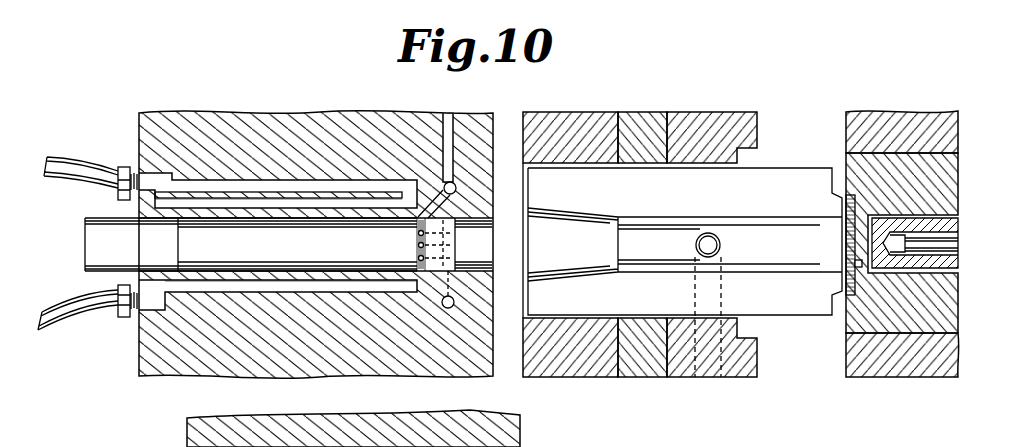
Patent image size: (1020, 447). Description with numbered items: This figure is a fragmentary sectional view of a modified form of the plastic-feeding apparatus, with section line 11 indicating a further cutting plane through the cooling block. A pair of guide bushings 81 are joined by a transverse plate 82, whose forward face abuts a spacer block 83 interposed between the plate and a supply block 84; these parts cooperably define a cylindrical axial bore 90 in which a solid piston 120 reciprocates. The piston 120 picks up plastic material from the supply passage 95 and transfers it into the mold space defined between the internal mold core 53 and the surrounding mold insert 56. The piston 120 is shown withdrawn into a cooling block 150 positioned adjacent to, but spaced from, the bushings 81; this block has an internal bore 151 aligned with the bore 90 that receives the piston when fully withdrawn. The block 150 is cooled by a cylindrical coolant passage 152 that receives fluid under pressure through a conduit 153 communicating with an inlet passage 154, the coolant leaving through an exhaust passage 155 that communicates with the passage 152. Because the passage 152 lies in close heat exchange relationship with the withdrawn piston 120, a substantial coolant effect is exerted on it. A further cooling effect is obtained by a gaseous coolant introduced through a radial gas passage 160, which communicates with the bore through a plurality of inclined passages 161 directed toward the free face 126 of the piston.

The section line 11 is at (450, 400).
The cooling block 150 is at (306, 106).
The radial gas passage 160 is at (446, 140).
The conduit 153 is at (84, 152).
The exhaust passage 155 is at (54, 326).
The solid piston 120 is at (88, 252).
The inlet passage 154 is at (262, 200).
The cylindrical coolant passage 152 is at (194, 204).
The free face 126 is at (418, 236).
The inclined passages 161 is at (444, 222).
The internal bore 151 is at (476, 278).
The transverse plate 82 is at (575, 104).
The spacer block 83 is at (640, 120).
The supply block 84 is at (710, 120).
The guide bushings 81 is at (780, 172).
The cylindrical axial bore 90 is at (776, 232).
The supply passage 95 is at (708, 232).
The mold core 53 is at (930, 228).
The mold insert 56 is at (950, 302).